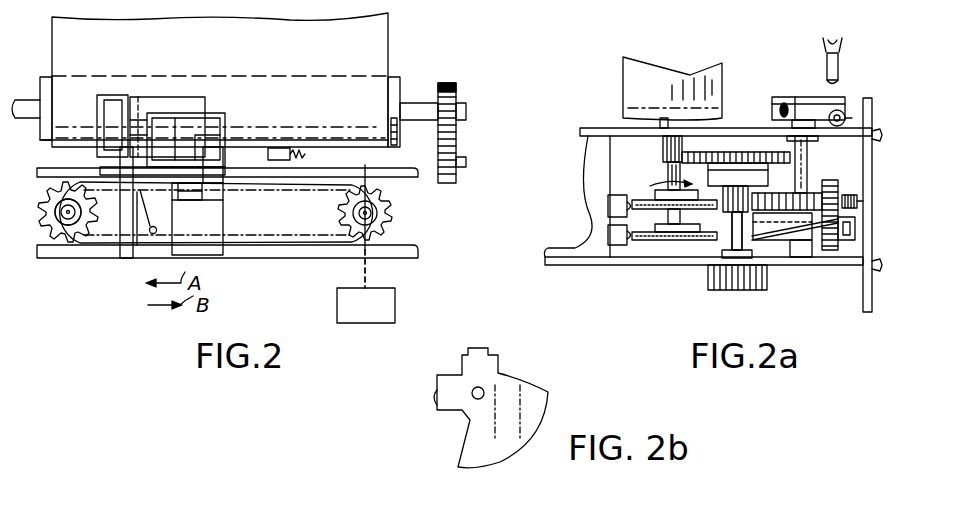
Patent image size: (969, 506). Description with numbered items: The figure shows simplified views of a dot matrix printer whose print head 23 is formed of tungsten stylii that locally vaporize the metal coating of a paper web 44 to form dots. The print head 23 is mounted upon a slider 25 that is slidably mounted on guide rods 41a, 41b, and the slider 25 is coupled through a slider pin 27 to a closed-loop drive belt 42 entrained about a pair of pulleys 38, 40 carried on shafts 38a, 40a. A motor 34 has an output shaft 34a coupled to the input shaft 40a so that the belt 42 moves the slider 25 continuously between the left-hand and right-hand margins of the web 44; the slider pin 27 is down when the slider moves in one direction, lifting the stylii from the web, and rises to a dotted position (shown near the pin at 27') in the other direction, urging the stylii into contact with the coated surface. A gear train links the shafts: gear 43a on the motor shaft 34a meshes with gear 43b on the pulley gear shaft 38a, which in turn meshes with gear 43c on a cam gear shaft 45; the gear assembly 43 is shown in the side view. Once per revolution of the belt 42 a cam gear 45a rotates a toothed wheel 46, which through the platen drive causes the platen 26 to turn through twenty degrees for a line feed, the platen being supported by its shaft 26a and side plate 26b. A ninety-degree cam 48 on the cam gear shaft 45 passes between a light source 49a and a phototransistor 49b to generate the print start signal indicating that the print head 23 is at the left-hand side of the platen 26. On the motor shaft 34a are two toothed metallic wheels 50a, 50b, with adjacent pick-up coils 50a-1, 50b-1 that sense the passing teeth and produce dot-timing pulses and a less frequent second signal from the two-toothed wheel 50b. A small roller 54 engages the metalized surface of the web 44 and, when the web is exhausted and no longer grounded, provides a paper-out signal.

In FIG. 2, the print head 23 is at (171, 112).
In FIG. 2, the slider 25 is at (212, 250).
In FIG. 2, the platen 26 is at (394, 78).
In FIG. 2, the shaft 26a is at (420, 110).
In FIG. 2, the gear / side plate 26b is at (452, 87).
In FIG. 2a, the gear / side plate 26b is at (871, 160).
In FIG. 2, the slider pin 27 is at (156, 217).
In FIG. 2, the guide block 27' is at (151, 98).
In FIG. 2, the motor 34 is at (366, 305).
In FIG. 2a, the motor 34 is at (718, 75).
In FIG. 2, the motor shaft 34a is at (366, 284).
In FIG. 2a, the motor shaft 34a is at (660, 122).
In FIG. 2, the pulley 38 is at (381, 213).
In FIG. 2a, the pulley 38 is at (710, 288).
In FIG. 2, the pulley gear shaft 38a is at (371, 168).
In FIG. 2a, the pulley gear shaft 38a is at (722, 250).
In FIG. 2, the pulley 40 is at (70, 236).
In FIG. 2, the input shaft 40a is at (58, 211).
In FIG. 2, the guide rod 41a is at (394, 170).
In FIG. 2, the guide rod 41b is at (325, 257).
In FIG. 2, the drive belt 42 is at (325, 236).
In FIG. 2a, the gear shaft 43 is at (663, 148).
In FIG. 2a, the gear 43a is at (763, 152).
In FIG. 2a, the gear 43b is at (733, 216).
In FIG. 2a, the gear 43c is at (857, 200).
In FIG. 2, the paper web 44 is at (65, 40).
In FIG. 2a, the cam gear shaft 45 is at (808, 160).
In FIG. 2b, the cam gear shaft 45 is at (475, 397).
In FIG. 2a, the cam gear 45a is at (855, 236).
In FIG. 2, the toothed wheel 46 is at (457, 152).
In FIG. 2a, the toothed wheel 46 is at (836, 252).
In FIG. 2a, the cam 48 is at (815, 97).
In FIG. 2b, the cam 48 is at (508, 359).
In FIG. 2a, the light source 49a is at (845, 112).
In FIG. 2a, the phototransistor 49b is at (842, 56).
In FIG. 2a, the toothed metallic wheel 50a is at (645, 204).
In FIG. 2a, the pick-up coil 50a-1 is at (608, 205).
In FIG. 2a, the toothed metallic wheel 50b is at (638, 238).
In FIG. 2a, the pick-up coil 50b-1 is at (608, 235).
In FIG. 2, the roller 54 is at (270, 148).